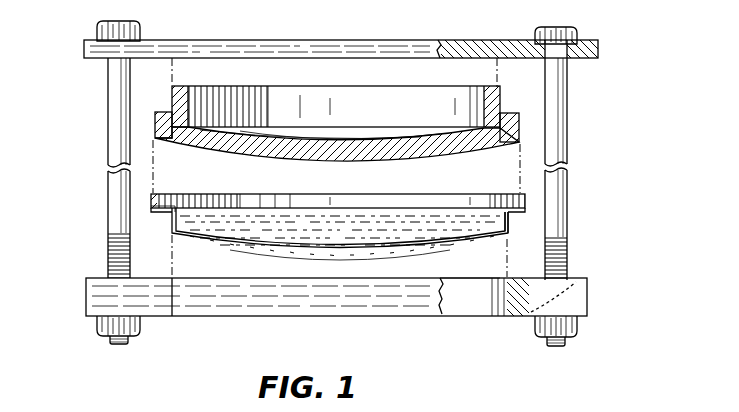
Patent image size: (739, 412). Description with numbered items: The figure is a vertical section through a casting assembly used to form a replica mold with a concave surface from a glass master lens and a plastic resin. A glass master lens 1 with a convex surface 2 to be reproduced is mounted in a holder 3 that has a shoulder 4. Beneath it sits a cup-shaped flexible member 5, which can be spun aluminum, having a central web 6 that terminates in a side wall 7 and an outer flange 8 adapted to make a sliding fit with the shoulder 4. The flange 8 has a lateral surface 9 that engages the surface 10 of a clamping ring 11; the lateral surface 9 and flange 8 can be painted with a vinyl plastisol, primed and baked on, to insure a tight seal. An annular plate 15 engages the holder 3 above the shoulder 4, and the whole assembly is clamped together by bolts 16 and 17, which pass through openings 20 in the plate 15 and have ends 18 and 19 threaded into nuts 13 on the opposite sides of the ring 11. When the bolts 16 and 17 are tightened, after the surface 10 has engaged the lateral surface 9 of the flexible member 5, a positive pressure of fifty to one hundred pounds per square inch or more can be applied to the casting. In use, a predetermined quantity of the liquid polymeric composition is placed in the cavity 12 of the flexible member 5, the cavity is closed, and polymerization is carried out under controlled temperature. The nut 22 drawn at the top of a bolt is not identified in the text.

The glass master lens 1 is at (327, 136).
The convex surface 2 is at (435, 147).
The holder 3 is at (402, 111).
The shoulder 4 is at (155, 120).
The cup-shaped flexible member 5 is at (380, 258).
The central web 6 is at (222, 252).
The side wall 7 is at (510, 222).
The outer flange 8 is at (527, 205).
The lateral surface 9 is at (166, 212).
The surface of clamping ring 10 is at (497, 288).
The clamping ring 11 is at (590, 297).
The cavity 12 is at (261, 228).
The nuts 13 is at (96, 323).
The annular plate 15 is at (338, 41).
The bolt 16 is at (568, 128).
The bolt 17 is at (107, 107).
The bolt end 18 is at (566, 344).
The bolt end 19 is at (131, 341).
The openings 20 is at (570, 60).
The top nut 22 is at (567, 27).